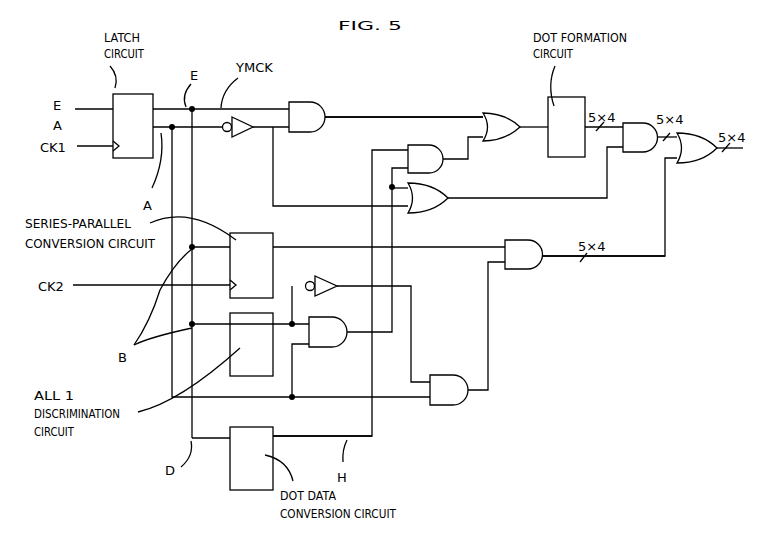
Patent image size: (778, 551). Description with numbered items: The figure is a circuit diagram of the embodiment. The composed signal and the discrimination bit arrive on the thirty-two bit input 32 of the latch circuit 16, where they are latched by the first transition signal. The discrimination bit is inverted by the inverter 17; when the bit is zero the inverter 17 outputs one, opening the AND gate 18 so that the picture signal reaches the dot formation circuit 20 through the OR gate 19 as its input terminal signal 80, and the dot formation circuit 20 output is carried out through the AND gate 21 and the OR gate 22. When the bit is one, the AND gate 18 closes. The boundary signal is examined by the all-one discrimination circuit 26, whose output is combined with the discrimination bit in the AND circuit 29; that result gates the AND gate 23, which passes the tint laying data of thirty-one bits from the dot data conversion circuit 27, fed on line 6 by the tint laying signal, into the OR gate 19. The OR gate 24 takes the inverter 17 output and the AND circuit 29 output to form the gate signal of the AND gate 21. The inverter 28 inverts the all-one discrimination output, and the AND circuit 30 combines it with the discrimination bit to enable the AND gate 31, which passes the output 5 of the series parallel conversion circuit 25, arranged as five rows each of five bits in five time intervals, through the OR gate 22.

The 5-bit output line 5 is at (458, 252).
The tint laying signal line 6 is at (204, 444).
The latch circuit 16 is at (128, 94).
The inverter 17 is at (241, 138).
The AND gate 18 is at (323, 108).
The OR gate 19 is at (500, 113).
The dot formation circuit 20 is at (570, 97).
The AND gate 21 is at (635, 123).
The OR gate 22 is at (688, 133).
The AND gate 23 is at (437, 173).
The OR gate 24 is at (430, 213).
The series parallel conversion circuit 25 is at (241, 233).
The ALL 1 discrimination circuit 26 is at (251, 377).
The dot data conversion circuit 27 is at (251, 491).
The inverter 28 is at (333, 283).
The AND circuit 29 is at (330, 349).
The AND circuit 30 is at (455, 406).
The AND gate 31 is at (162, 113).
The 32-bit input 32 is at (84, 114).
The input terminal signal 80 is at (453, 116).